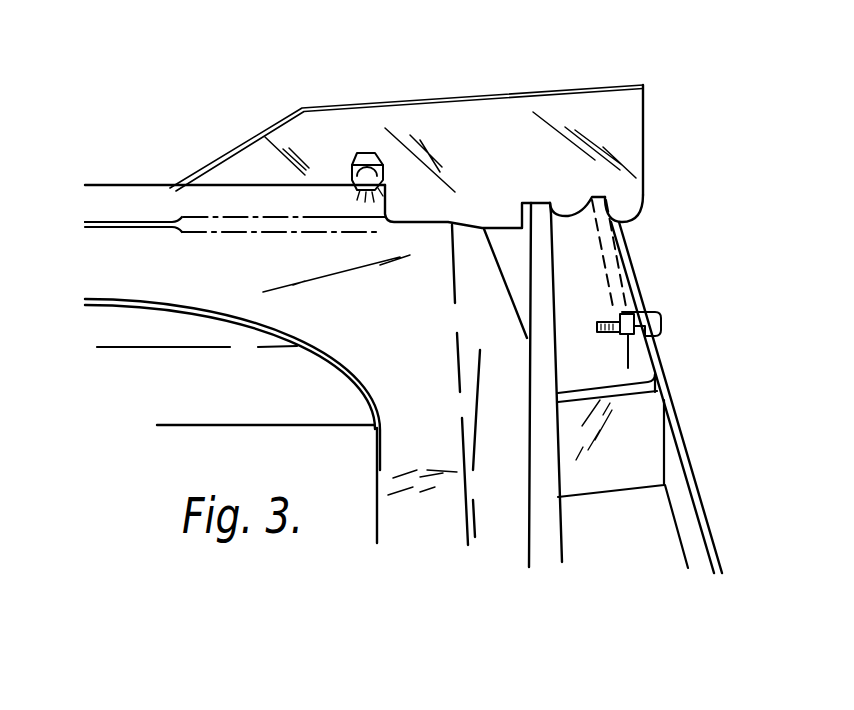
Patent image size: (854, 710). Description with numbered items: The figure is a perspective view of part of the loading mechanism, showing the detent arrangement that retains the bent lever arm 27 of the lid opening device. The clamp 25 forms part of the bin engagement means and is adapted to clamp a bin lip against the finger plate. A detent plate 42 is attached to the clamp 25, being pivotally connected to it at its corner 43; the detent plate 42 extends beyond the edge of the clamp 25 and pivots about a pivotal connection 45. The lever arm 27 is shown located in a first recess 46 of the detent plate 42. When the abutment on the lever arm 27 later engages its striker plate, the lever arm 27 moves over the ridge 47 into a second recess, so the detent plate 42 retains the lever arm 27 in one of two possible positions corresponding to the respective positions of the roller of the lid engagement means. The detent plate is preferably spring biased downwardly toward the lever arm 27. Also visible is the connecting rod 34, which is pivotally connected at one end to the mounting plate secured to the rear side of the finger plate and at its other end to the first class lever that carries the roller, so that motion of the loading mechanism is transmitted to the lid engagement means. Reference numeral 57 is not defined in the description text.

The clamp 25 is at (338, 336).
The bent lever arm 27 is at (543, 292).
The connecting rod 34 is at (688, 455).
The detent plate 42 is at (472, 110).
The corner 43 is at (420, 318).
The pivotal connection 45 is at (367, 150).
The first recess 46 is at (531, 201).
The ridge 47 is at (622, 221).
The recess 57 is at (570, 213).